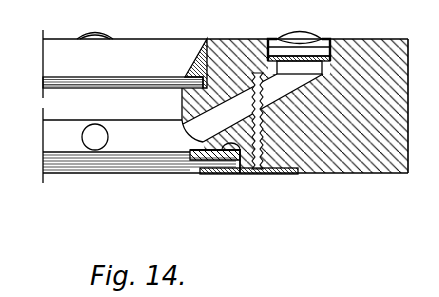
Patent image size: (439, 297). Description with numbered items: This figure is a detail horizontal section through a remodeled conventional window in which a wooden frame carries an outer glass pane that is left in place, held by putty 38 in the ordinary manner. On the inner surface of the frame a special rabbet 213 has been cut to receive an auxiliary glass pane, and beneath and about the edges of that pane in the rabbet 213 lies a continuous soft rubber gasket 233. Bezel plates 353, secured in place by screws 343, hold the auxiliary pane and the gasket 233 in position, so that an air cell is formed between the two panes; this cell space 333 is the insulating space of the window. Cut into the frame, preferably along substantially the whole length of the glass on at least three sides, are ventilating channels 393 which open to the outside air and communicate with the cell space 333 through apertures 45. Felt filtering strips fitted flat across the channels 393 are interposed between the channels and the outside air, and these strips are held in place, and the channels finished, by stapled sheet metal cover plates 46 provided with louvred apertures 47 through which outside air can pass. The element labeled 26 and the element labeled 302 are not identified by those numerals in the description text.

The louvred apertures 47 is at (84, 36).
The light conductor 26 is at (143, 77).
The putty 38 is at (199, 63).
The apertures 45 is at (238, 105).
The packing ring 302 is at (282, 57).
The sheet metal cover plates 46 is at (313, 50).
The ventilating channels 393 is at (333, 39).
The cell space 333 is at (123, 110).
The soft rubber gasket 233 is at (190, 153).
The rabbet 213 is at (242, 148).
The screws 343 is at (260, 172).
The bezel plates 353 is at (293, 174).